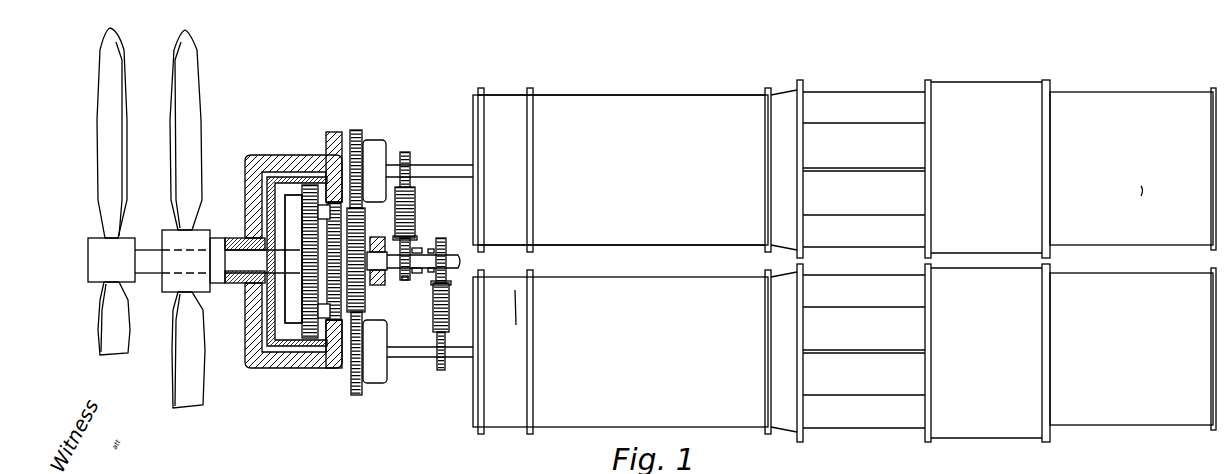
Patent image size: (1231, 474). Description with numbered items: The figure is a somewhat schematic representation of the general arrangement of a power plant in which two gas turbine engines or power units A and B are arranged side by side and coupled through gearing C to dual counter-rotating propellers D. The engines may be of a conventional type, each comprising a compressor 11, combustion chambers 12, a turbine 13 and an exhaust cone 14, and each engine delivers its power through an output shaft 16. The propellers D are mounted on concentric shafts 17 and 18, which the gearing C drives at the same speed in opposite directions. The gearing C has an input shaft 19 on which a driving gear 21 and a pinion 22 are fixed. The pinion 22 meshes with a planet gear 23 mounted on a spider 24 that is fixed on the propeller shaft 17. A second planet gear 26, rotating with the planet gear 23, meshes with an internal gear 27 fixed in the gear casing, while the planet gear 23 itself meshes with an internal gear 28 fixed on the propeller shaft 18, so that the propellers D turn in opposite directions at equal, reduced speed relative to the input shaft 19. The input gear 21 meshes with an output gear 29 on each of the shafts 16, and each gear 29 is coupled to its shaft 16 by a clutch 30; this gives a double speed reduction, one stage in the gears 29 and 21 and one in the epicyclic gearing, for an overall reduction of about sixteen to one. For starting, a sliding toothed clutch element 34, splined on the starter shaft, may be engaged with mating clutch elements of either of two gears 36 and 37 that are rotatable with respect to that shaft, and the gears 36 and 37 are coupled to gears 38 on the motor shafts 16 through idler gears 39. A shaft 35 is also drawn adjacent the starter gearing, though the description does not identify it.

The gas turbine engine A is at (690, 100).
The gas turbine engine B is at (605, 425).
The gearing C is at (262, 165).
The dual counter-rotating propellers D is at (175, 75).
The compressor 11 is at (660, 245).
The combustion chambers 12 is at (842, 240).
The turbine 13 is at (1040, 245).
The exhaust cone 14 is at (1162, 235).
The output shaft 16 is at (430, 164).
The propeller shaft 17 is at (150, 265).
The propeller shaft 18 is at (236, 285).
The input shaft 19 is at (378, 286).
The driving gear 21 is at (385, 244).
The pinion 22 is at (298, 262).
The planet gear 23 is at (308, 184).
The spider 24 is at (290, 226).
The second planet gear 26 is at (333, 160).
The internal gear 27 is at (334, 355).
The internal gear 28 is at (268, 196).
The output gear 29 is at (356, 128).
The clutch 30 is at (374, 142).
The sliding toothed clutch element 34 is at (419, 249).
The shaft 35 is at (462, 262).
The gear 36 is at (445, 240).
The gear 37 is at (405, 282).
The gear 38 is at (405, 151).
The idler gear 39 is at (416, 196).